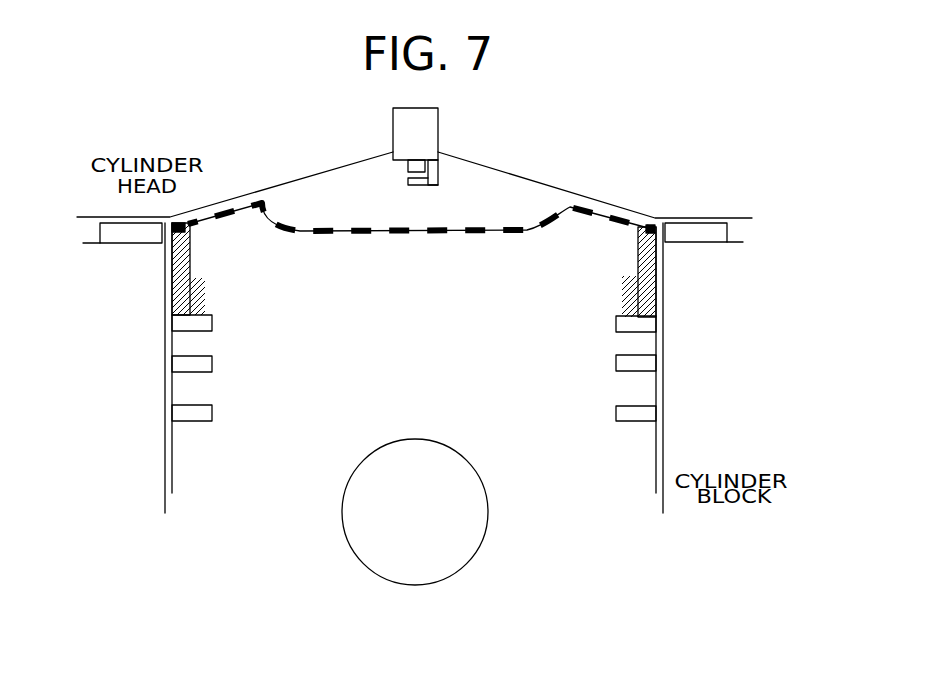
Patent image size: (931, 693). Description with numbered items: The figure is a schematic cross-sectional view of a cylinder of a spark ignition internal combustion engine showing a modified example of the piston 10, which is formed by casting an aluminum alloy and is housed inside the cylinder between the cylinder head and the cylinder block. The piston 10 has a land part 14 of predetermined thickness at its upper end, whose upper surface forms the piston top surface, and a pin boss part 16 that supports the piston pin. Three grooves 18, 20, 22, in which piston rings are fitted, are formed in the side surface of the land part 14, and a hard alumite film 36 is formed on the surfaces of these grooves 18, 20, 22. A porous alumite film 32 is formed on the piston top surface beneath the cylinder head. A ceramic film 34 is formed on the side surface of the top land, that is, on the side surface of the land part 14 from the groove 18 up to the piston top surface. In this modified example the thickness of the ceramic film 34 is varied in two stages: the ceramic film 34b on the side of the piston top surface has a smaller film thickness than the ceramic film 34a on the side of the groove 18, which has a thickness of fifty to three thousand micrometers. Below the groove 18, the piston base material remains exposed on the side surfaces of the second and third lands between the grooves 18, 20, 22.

The piston 10 is at (611, 492).
The land part 14 is at (200, 443).
The pin boss part 16 is at (440, 543).
The groove 18 is at (178, 323).
The groove 20 is at (178, 364).
The groove 22 is at (188, 414).
The porous alumite film 32 is at (317, 230).
The ceramic film 34 is at (439, 270).
The ceramic film 34a is at (172, 289).
The ceramic film 34b is at (170, 252).
The hard alumite film 36 is at (642, 327).